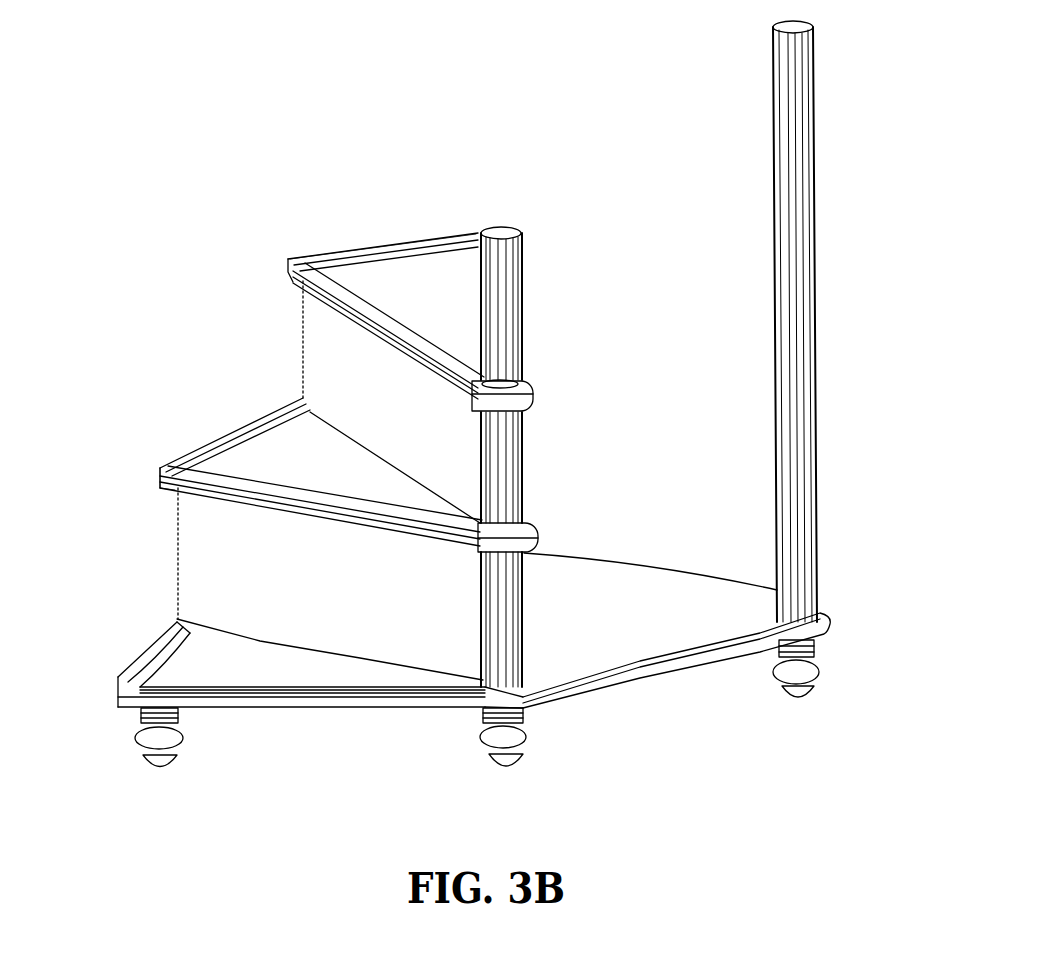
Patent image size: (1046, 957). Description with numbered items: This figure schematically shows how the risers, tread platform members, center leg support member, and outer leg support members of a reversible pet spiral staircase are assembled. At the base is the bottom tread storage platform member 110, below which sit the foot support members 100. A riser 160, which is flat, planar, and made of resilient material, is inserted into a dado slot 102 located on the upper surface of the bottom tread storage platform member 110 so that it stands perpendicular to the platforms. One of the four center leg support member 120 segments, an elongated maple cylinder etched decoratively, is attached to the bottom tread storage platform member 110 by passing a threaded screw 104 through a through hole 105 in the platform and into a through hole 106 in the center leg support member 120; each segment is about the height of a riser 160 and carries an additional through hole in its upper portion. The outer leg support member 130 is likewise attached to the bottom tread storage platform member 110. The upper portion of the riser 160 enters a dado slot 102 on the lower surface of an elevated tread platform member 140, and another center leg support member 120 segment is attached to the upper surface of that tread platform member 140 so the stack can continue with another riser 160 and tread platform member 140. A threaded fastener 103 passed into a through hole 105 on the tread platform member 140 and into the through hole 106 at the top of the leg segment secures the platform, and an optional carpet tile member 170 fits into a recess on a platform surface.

The foot support member 100 is at (523, 737).
The dado slot 102 is at (303, 299).
The threaded fastener 103 is at (402, 210).
The threaded screw 104 is at (528, 385).
The through hole 105 is at (395, 244).
The through hole 106 is at (793, 28).
The bottom tread storage platform member 110 is at (660, 663).
The center leg support member 120 is at (523, 292).
The outer leg support member 130 is at (773, 152).
The tread platform member 140 is at (162, 474).
The riser 160 is at (330, 584).
The carpet tile member 170 is at (183, 654).